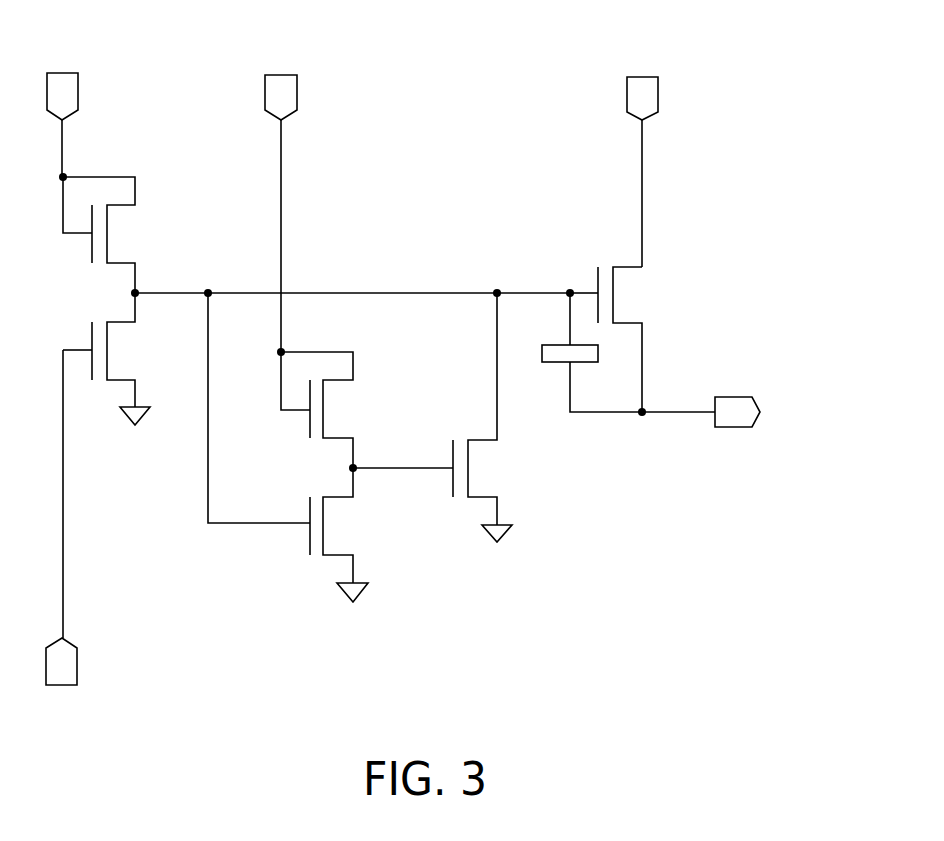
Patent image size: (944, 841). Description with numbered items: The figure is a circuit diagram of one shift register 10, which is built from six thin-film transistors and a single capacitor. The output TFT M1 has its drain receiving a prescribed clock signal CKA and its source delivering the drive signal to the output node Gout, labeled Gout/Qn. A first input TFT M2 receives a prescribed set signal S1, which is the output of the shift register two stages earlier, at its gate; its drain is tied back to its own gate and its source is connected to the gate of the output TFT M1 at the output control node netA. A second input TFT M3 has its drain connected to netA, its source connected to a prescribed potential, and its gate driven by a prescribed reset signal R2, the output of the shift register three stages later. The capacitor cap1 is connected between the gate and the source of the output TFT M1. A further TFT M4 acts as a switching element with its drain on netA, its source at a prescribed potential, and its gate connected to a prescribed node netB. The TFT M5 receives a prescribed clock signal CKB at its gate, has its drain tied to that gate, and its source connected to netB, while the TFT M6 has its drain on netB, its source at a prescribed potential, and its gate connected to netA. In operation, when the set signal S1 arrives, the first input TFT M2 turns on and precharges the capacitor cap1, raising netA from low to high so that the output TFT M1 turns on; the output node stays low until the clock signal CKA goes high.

The shift register 10 is at (832, 36).
The output TFT M1 is at (621, 341).
The first input TFT M2 is at (110, 233).
The second input TFT M3 is at (112, 359).
The TFT (prescribed switching element) M4 is at (490, 417).
The TFT M5 is at (328, 408).
The TFT M6 is at (293, 447).
The capacitor cap1 is at (592, 352).
The output control node netA is at (352, 285).
The prescribed node netB is at (401, 459).
The set signal S1 is at (98, 110).
The reset signal R2 is at (98, 536).
The clock signal CKB is at (314, 198).
The clock signal CKA is at (675, 156).
The output node Gout is at (748, 412).